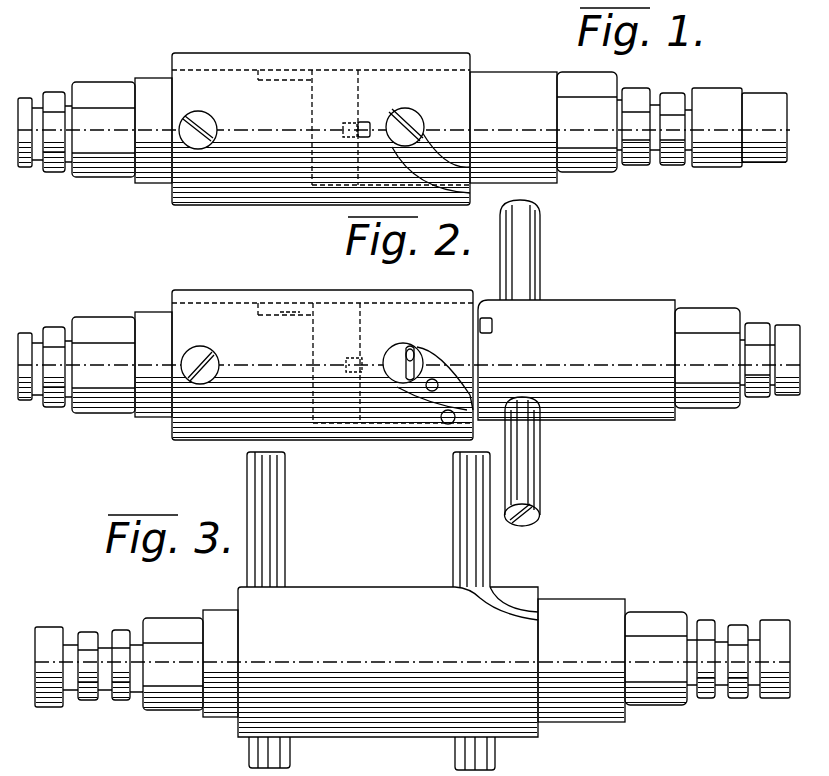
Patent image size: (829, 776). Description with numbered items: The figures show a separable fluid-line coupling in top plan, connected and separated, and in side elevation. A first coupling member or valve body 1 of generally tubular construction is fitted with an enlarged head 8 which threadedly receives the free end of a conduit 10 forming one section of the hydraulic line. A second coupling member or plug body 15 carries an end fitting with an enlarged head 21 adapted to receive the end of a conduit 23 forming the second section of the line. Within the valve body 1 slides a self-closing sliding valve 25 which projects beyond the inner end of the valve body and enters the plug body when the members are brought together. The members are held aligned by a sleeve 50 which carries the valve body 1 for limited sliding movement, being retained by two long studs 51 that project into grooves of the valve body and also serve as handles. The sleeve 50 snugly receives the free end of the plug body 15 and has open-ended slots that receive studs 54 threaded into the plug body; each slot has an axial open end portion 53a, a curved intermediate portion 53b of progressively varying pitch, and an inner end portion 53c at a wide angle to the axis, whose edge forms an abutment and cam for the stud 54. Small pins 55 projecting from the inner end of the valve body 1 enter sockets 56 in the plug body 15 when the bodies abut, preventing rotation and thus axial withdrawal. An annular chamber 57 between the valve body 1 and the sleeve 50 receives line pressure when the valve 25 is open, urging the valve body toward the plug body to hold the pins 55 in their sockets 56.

In FIG. 1, the valve body 1 is at (155, 178).
In FIG. 1, the enlarged head 8 is at (110, 172).
In FIG. 2, the enlarged head 8 is at (110, 408).
In FIG. 3, the enlarged head 8 is at (170, 628).
In FIG. 1, the conduit 10 is at (28, 165).
In FIG. 2, the conduit 10 is at (28, 400).
In FIG. 3, the conduit 10 is at (48, 630).
In FIG. 1, the plug body 15 is at (540, 186).
In FIG. 2, the plug body 15 is at (623, 407).
In FIG. 3, the plug body 15 is at (605, 606).
In FIG. 1, the enlarged head 21 is at (593, 167).
In FIG. 2, the enlarged head 21 is at (718, 400).
In FIG. 3, the enlarged head 21 is at (665, 622).
In FIG. 1, the conduit 23 is at (762, 162).
In FIG. 2, the conduit 23 is at (793, 396).
In FIG. 3, the conduit 23 is at (775, 620).
In FIG. 2, the sliding valve 25 is at (398, 372).
In FIG. 1, the sleeve 50 is at (287, 53).
In FIG. 2, the sleeve 50 is at (238, 290).
In FIG. 3, the sleeve 50 is at (386, 587).
In FIG. 1, the studs 51 is at (197, 149).
In FIG. 2, the studs 51 is at (205, 348).
In FIG. 3, the studs 51 is at (248, 565).
In FIG. 2, the open end portion 53a is at (447, 424).
In FIG. 3, the open end portion 53a is at (540, 584).
In FIG. 2, the intermediate portion 53b is at (450, 387).
In FIG. 2, the inner end portion 53c is at (409, 355).
In FIG. 1, the studs 54 is at (405, 118).
In FIG. 2, the studs 54 is at (540, 272).
In FIG. 3, the studs 54 is at (487, 553).
In FIG. 1, the pins 55 is at (345, 123).
In FIG. 2, the pins 55 is at (366, 358).
In FIG. 1, the sockets 56 is at (365, 120).
In FIG. 2, the sockets 56 is at (492, 325).
In FIG. 2, the annular chamber 57 is at (287, 305).